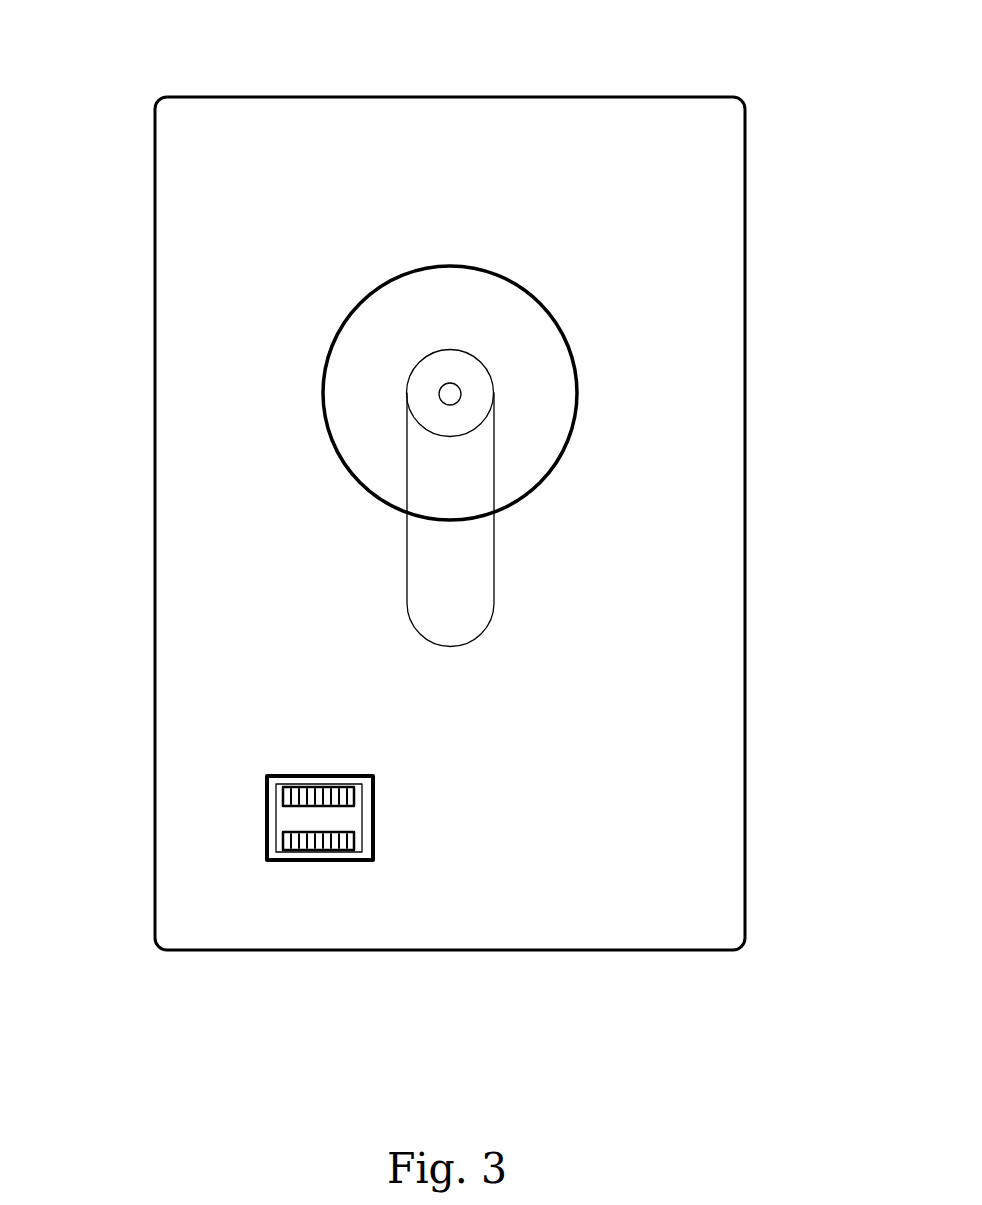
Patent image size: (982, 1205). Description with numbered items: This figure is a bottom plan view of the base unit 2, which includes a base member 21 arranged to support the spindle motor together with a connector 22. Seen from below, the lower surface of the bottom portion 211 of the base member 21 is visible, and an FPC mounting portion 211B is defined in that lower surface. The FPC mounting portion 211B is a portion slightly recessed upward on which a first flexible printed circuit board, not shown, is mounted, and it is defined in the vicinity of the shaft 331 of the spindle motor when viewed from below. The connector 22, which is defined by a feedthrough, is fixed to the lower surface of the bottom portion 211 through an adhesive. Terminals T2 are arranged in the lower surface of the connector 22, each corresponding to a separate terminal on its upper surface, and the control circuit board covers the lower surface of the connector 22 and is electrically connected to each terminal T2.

The base unit 2 is at (611, 85).
The base member 21 is at (703, 97).
The bottom portion 211 is at (504, 842).
The FPC mounting portion 211B is at (464, 580).
The shaft 331 is at (459, 383).
The connector 22 is at (239, 914).
The terminals T2 is at (348, 858).